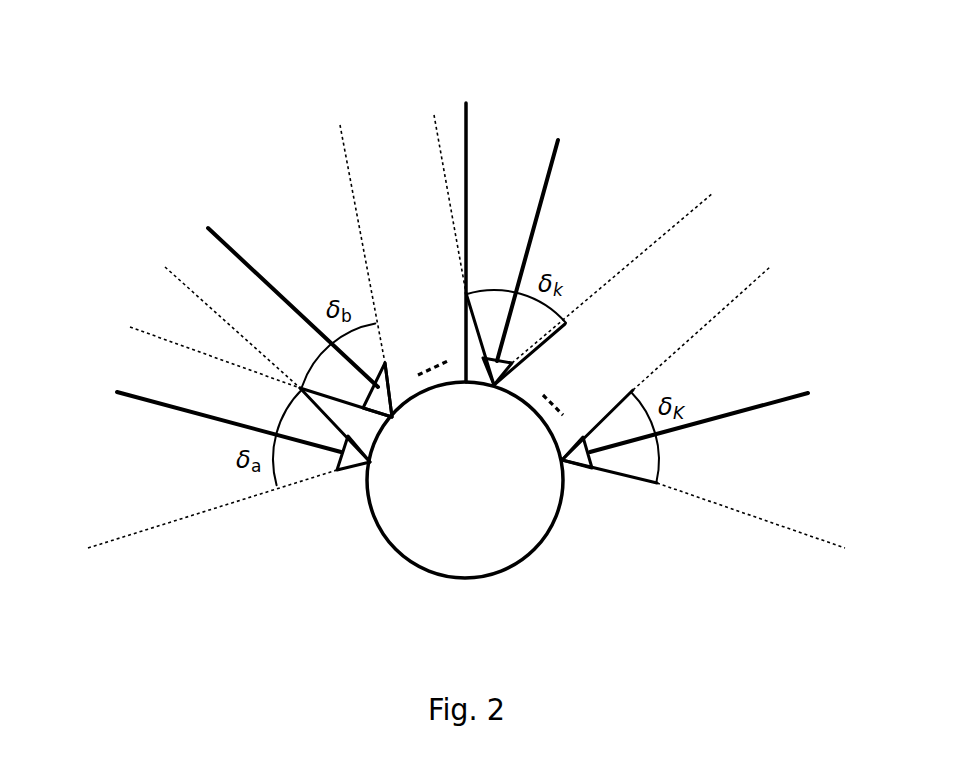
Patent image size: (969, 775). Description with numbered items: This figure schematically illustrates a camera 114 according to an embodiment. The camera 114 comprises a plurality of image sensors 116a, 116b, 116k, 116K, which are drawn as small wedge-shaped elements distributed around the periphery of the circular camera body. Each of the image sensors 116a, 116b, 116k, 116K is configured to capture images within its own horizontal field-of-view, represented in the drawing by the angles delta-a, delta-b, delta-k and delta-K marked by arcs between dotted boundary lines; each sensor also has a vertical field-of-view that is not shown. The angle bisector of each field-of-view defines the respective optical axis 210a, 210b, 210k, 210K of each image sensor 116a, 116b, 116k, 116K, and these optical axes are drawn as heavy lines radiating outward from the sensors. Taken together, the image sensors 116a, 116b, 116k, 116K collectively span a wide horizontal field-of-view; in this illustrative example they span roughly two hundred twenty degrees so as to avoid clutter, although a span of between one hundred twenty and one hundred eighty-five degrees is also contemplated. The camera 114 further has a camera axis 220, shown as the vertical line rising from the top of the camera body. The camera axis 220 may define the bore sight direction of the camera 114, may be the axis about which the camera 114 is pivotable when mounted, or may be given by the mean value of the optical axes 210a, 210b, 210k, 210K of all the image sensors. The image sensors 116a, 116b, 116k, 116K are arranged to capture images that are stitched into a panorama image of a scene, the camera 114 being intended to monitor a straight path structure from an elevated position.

The camera 114 is at (413, 563).
The image sensor 116a is at (355, 466).
The image sensor 116b is at (388, 362).
The image sensor 116k is at (513, 363).
The image sensor 116K is at (591, 469).
The optical axis 210a is at (152, 403).
The optical axis 210b is at (223, 238).
The optical axis 210k is at (553, 165).
The optical axis 210K is at (773, 405).
The camera axis 220 is at (467, 117).